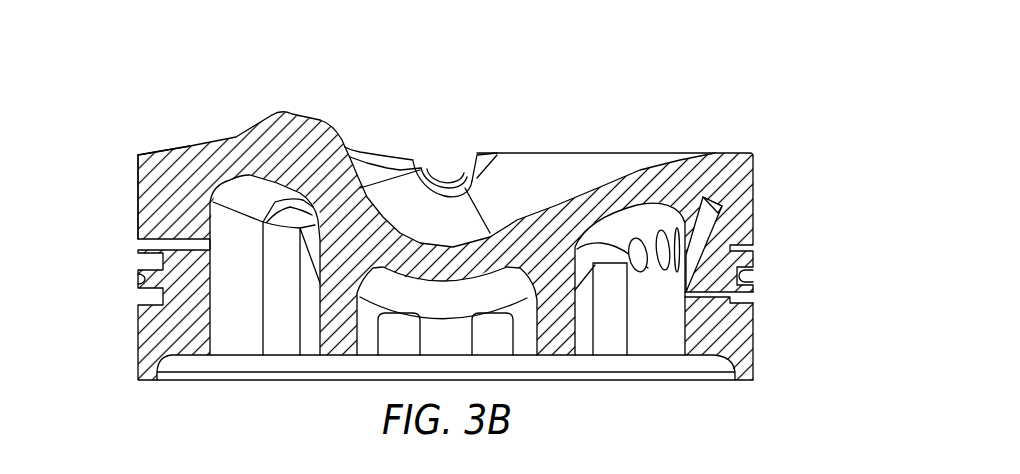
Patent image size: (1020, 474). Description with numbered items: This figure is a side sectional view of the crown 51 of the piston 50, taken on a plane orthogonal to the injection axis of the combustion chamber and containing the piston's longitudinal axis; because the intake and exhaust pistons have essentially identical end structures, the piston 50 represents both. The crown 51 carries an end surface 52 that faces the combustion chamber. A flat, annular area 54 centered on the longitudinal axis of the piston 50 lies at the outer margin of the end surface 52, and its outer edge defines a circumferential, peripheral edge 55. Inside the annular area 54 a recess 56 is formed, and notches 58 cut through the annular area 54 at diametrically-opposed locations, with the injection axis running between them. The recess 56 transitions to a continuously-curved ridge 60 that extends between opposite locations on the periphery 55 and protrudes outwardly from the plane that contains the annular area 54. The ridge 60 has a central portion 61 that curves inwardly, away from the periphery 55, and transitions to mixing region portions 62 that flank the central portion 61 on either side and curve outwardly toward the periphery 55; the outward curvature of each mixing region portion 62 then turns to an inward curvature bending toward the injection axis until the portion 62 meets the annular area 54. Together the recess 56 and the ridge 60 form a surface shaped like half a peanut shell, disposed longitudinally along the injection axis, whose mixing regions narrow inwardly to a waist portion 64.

The piston 50 is at (445, 202).
The crown 51 is at (779, 235).
The end surface 52 is at (230, 104).
The flat annular area 54 is at (148, 99).
The peripheral edge 55 is at (99, 163).
The recess 56 is at (602, 154).
The notches 58 is at (461, 134).
The continuously-curved ridge 60 is at (420, 143).
The central portion 61 is at (327, 87).
The mixing region portions 62 is at (260, 67).
The waist portion 64 is at (417, 174).